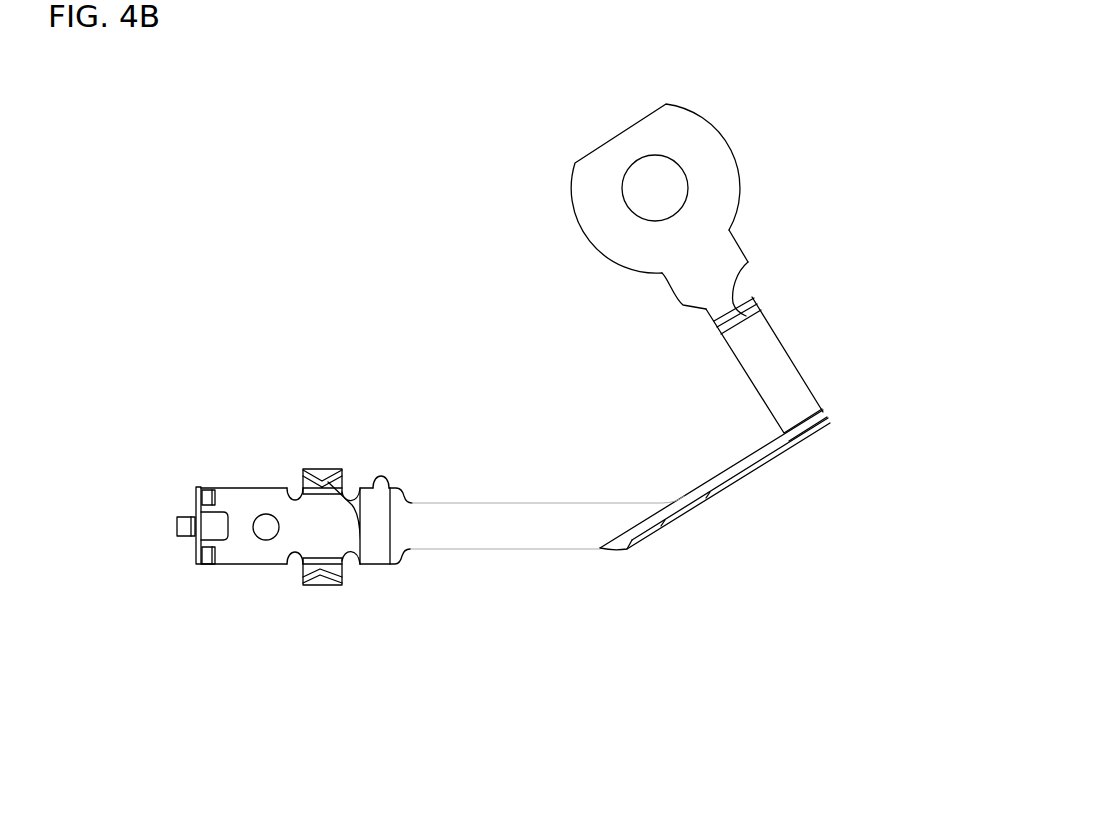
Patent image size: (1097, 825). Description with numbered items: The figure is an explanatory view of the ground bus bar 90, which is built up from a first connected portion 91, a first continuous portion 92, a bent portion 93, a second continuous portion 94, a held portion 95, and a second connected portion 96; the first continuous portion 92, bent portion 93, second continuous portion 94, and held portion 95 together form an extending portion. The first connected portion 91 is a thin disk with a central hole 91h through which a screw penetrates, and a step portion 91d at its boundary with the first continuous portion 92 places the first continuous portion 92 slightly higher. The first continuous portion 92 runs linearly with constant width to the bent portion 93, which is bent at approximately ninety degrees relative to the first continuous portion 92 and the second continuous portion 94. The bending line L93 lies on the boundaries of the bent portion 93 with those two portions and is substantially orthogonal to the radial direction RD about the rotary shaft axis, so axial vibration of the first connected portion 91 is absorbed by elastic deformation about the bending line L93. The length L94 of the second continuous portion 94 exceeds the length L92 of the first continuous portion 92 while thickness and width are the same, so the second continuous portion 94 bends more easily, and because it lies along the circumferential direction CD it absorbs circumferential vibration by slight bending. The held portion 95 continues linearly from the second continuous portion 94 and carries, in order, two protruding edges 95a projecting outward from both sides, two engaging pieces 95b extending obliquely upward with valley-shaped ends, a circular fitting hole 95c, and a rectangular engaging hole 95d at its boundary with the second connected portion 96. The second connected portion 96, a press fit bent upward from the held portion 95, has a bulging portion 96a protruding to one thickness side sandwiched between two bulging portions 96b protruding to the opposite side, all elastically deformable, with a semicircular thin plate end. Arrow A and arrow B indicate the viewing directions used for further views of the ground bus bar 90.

The ground bus bar 90 is at (850, 118).
The first connected portion 91 is at (718, 183).
The hole 91h is at (678, 158).
The step portion 91d is at (750, 263).
The first continuous portion 92 is at (755, 352).
The bent portion 93 is at (742, 472).
The second continuous portion 94 is at (497, 530).
The held portion 95 is at (312, 468).
The protruding edges 95a is at (377, 563).
The engaging pieces 95b is at (360, 612).
The fitting hole 95c is at (259, 513).
The engaging hole 95d is at (224, 535).
The second connected portion 96 is at (187, 500).
The bulging portion 96a is at (177, 522).
The bulging portions 96b is at (214, 490).
The length of the first continuous portion L92 is at (812, 273).
The bending line L93 is at (625, 550).
The length of the second continuous portion L94 is at (603, 522).
The radial direction RD is at (608, 117).
The circumferential direction CD is at (607, 330).
The arrow A is at (505, 628).
The arrow B is at (867, 443).